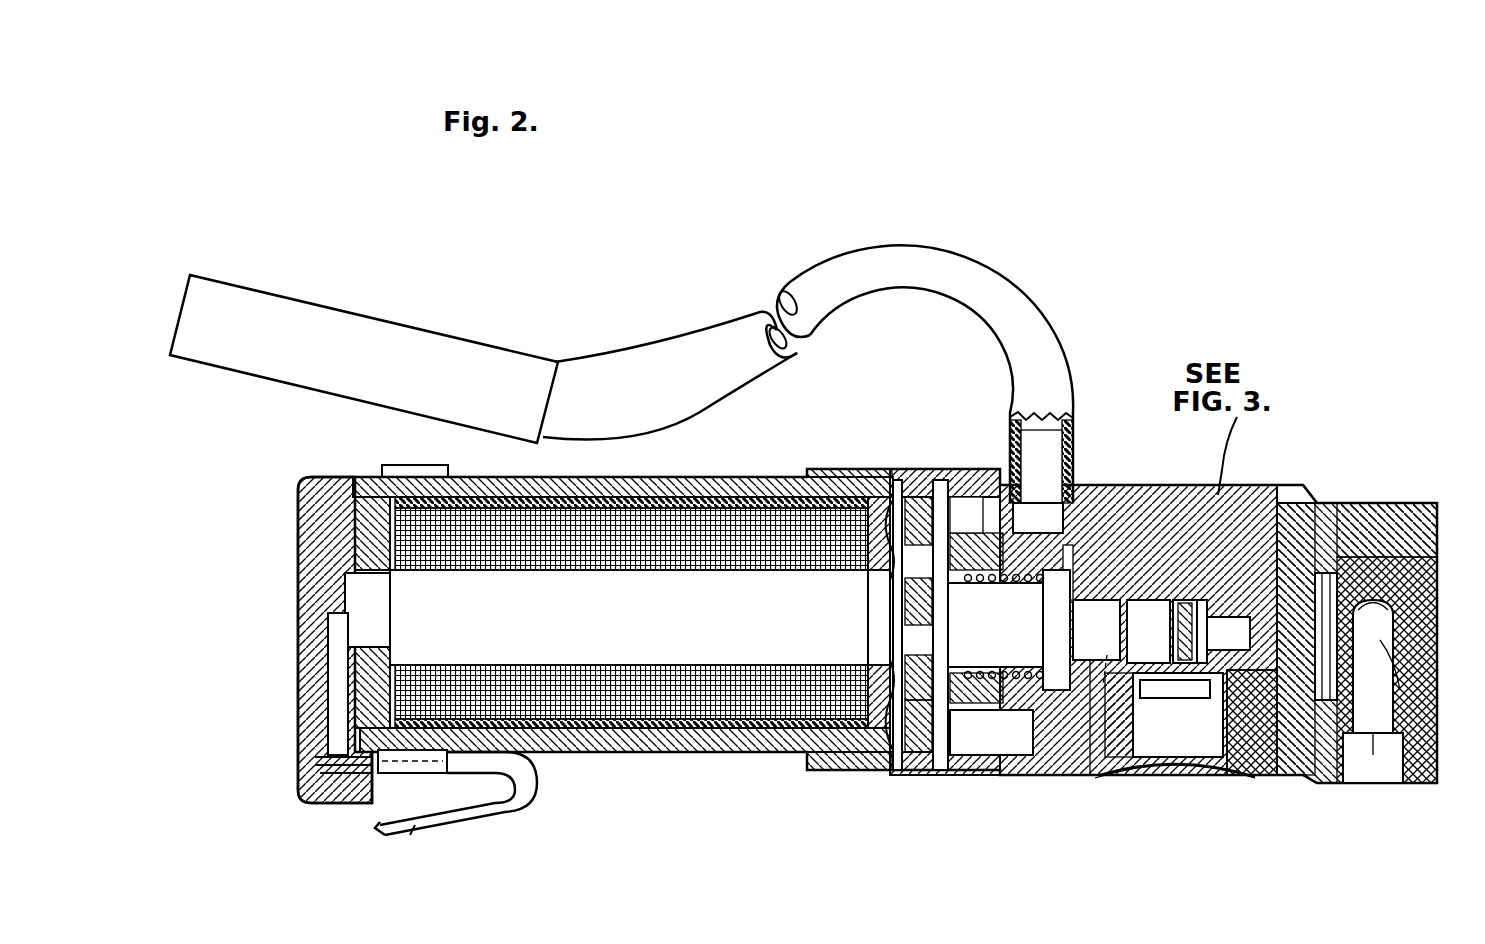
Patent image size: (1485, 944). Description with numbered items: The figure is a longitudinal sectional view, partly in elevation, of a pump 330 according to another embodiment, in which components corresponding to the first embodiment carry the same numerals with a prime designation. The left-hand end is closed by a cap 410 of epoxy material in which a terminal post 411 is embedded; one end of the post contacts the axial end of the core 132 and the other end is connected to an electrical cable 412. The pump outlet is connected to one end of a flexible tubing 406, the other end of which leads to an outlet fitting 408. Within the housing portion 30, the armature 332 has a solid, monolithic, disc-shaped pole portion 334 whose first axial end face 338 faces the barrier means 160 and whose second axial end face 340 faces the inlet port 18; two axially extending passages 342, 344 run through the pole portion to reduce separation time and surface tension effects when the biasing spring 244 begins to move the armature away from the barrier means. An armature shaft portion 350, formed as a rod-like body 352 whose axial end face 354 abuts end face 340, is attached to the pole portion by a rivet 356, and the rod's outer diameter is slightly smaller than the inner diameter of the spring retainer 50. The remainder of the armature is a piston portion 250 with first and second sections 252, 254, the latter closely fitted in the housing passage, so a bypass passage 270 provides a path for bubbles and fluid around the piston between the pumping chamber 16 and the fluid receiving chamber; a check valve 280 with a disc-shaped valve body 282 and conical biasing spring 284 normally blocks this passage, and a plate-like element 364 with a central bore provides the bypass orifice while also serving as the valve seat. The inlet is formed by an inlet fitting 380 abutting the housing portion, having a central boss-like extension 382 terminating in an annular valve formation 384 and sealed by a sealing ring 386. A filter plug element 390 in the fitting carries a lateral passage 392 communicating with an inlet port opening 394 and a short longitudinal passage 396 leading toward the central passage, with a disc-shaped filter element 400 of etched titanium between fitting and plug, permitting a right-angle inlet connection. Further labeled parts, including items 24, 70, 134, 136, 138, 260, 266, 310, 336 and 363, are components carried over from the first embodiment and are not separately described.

The pump 330 is at (318, 448).
The outlet fitting 408 is at (413, 327).
The flexible tubing 406 is at (1045, 312).
The housing portion 30 is at (1252, 485).
The inlet fitting 380 is at (1370, 503).
The filter plug element 390 is at (1425, 562).
The longitudinally extending passage 396 is at (1402, 622).
The filter element 400 is at (1395, 660).
The laterally extending passage 392 is at (1400, 683).
The inlet port opening 394 is at (1373, 755).
The inlet port 18 is at (1370, 758).
The boss-like extension 382 is at (1247, 634).
The sealing ring 386 is at (1298, 485).
The plate-like element 364 is at (1247, 722).
The annular valve formation 384 is at (1222, 633).
The first piston section 252 is at (1095, 642).
The second piston section 254 is at (1147, 631).
The valve element 266 is at (1125, 595).
The seal 260 is at (1205, 595).
The piston portion 250 is at (1128, 590).
The inlet passage 24 is at (1175, 595).
The check valve 280 is at (1162, 775).
The valve body 282 is at (1175, 772).
The conical biasing spring 284 is at (1130, 765).
The bypass passage 270 is at (1090, 778).
The armature 332 is at (940, 777).
The biasing spring 244 is at (1040, 519).
The spring retainer 50 is at (968, 497).
The second axial end face 340 is at (955, 733).
The rod-like body 352 is at (992, 625).
The plate 363 is at (1050, 607).
The armature shaft portion 350 is at (1048, 665).
The axial end face 354 is at (930, 598).
The rivet 356 is at (922, 622).
The pumping chamber 16 is at (940, 480).
The first axial end face 338 is at (912, 497).
The pole portion 334 is at (900, 480).
The plate 336 is at (895, 775).
The seal 70 is at (896, 480).
The solenoid housing 136 is at (742, 497).
The bobbin 138 is at (670, 497).
The coil 134 is at (600, 497).
The core 132 is at (629, 617).
The through passage 342 is at (880, 597).
The barrier means 160 is at (878, 587).
The armature 310 is at (880, 625).
The through passage 344 is at (893, 640).
The cap 410 is at (300, 547).
The terminal post 411 is at (330, 640).
The electrical cable 412 is at (465, 820).